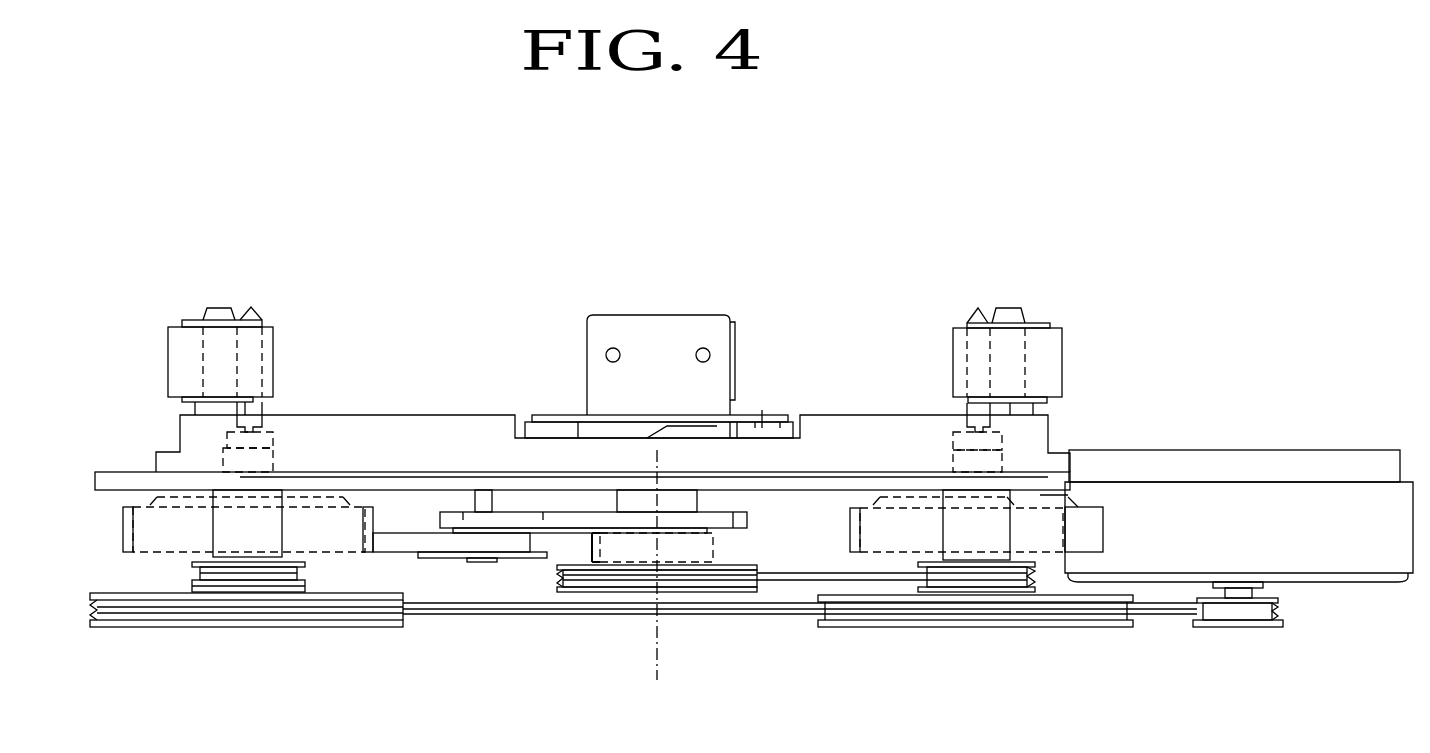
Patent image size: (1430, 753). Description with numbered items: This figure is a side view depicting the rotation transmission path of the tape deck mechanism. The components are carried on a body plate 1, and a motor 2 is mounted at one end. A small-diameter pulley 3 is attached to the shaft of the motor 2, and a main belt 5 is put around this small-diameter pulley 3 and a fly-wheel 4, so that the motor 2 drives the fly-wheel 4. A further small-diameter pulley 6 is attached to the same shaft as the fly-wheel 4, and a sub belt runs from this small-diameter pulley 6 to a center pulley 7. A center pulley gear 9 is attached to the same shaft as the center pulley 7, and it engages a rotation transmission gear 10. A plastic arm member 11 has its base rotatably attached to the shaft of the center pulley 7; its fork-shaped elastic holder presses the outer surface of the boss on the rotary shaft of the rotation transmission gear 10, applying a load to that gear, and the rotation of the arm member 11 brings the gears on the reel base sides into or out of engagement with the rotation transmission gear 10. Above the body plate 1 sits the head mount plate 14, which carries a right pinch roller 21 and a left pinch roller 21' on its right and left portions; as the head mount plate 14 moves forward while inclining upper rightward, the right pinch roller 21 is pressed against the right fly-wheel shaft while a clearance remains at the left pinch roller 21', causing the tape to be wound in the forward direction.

The body plate 1 is at (887, 482).
The motor 2 is at (1297, 503).
The small-diameter pulley 3 is at (1213, 625).
The fly-wheel 4 is at (1008, 627).
The main belt 5 is at (933, 612).
The small-diameter pulley 6 is at (968, 588).
The center pulley 7 is at (700, 590).
The center pulley gear 9 is at (600, 557).
The rotation transmission gear 10 is at (440, 542).
The plastic arm member 11 is at (597, 518).
The head mount plate 14 is at (448, 440).
The pinch roller 21 is at (1046, 365).
The pinch roller 21' is at (179, 360).